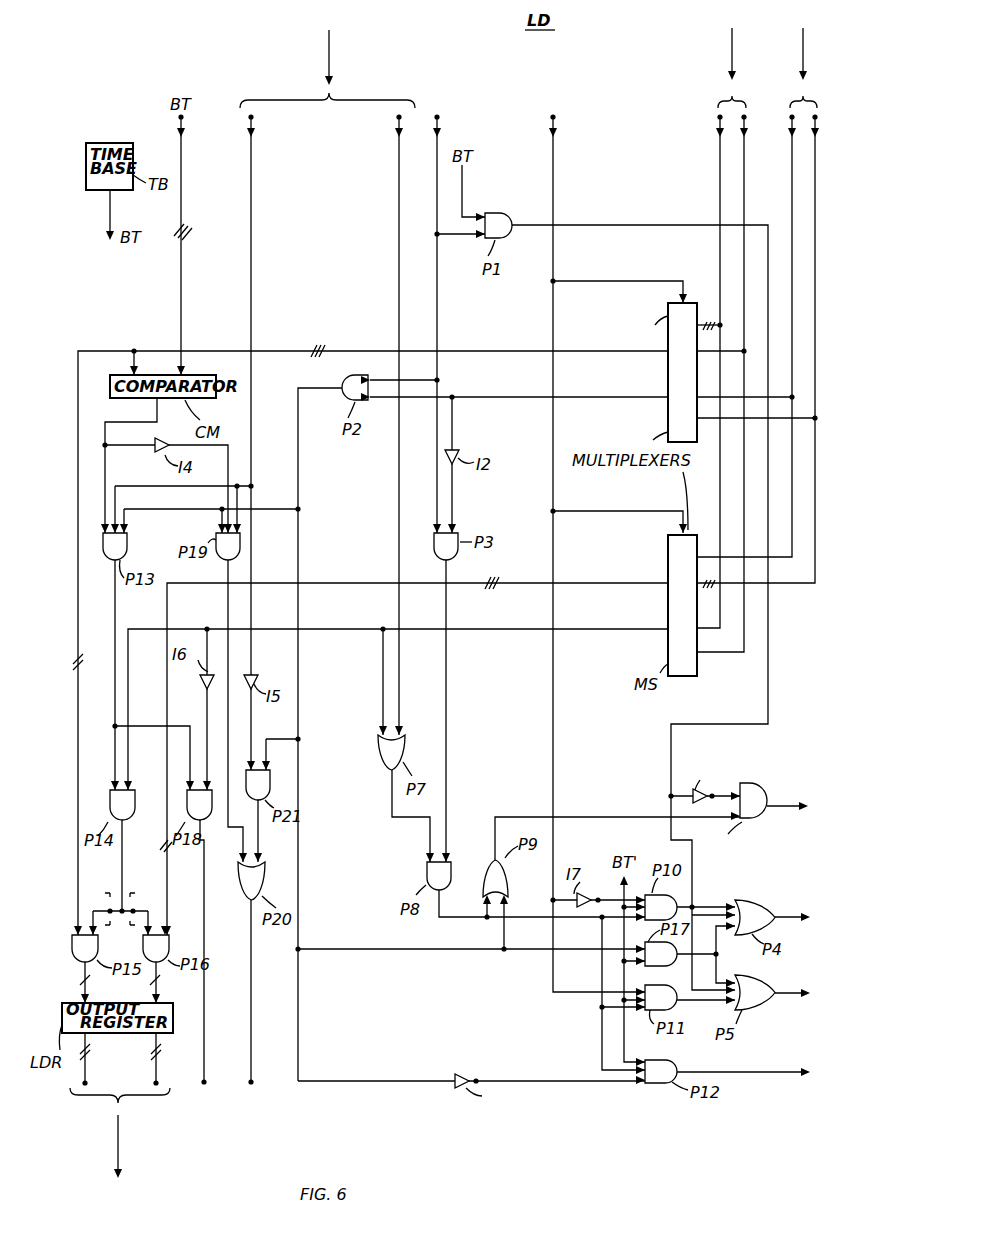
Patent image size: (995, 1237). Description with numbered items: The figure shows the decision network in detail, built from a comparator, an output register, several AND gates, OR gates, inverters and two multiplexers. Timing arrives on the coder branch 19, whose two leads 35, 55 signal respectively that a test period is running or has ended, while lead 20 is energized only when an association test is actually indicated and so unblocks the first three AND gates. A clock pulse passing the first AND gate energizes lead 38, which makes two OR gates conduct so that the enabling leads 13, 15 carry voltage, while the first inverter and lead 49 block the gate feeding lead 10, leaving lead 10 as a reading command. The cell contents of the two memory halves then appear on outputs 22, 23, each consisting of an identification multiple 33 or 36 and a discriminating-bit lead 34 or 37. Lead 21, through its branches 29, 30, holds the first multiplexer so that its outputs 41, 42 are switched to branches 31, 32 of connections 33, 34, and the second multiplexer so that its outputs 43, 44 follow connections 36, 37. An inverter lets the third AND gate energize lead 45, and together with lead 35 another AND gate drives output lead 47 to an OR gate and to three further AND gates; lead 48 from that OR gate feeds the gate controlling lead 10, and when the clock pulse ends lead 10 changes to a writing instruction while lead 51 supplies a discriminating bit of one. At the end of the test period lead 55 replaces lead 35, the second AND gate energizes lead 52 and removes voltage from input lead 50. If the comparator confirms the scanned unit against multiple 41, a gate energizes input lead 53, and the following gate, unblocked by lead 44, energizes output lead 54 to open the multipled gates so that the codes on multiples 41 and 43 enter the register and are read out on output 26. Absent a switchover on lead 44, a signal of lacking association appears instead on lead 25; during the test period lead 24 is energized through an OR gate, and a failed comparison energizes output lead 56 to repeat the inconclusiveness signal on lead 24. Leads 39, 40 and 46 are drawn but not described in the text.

The lead 10 is at (782, 808).
The lead 13 is at (778, 910).
The lead 15 is at (780, 996).
The branch 19 is at (329, 58).
The lead 20 is at (437, 172).
The lead 21 is at (553, 172).
The output 22 is at (725, 58).
The output 23 is at (805, 60).
The lead 24 is at (251, 1035).
The lead 25 is at (204, 1025).
The output 26 is at (118, 1140).
The branch 29 is at (600, 281).
The branch 30 is at (605, 511).
The branch 31 is at (712, 323).
The branch 32 is at (730, 354).
The multiple 33 is at (722, 178).
The lead 34 is at (744, 158).
The lead 35 is at (399, 298).
The multiple 36 is at (790, 166).
The lead 37 is at (815, 190).
The lead 38 is at (768, 238).
The MR output line to k 39 is at (778, 395).
The MR output line to kx 40 is at (780, 428).
The output multiple 41 is at (595, 351).
The output 42 is at (625, 390).
The output multiple 43 is at (600, 583).
The output 44 is at (600, 629).
The lead 45 is at (446, 680).
The gate P7 output line 46 is at (398, 818).
The output lead 47 is at (458, 915).
The output lead 48 is at (590, 817).
The lead 49 is at (722, 792).
The input lead 50 is at (530, 1081).
The lead 51 is at (760, 1072).
The lead 52 is at (298, 480).
The input lead 53 is at (112, 634).
The output lead 54 is at (122, 870).
The lead 55 is at (251, 310).
The output lead 56 is at (224, 848).